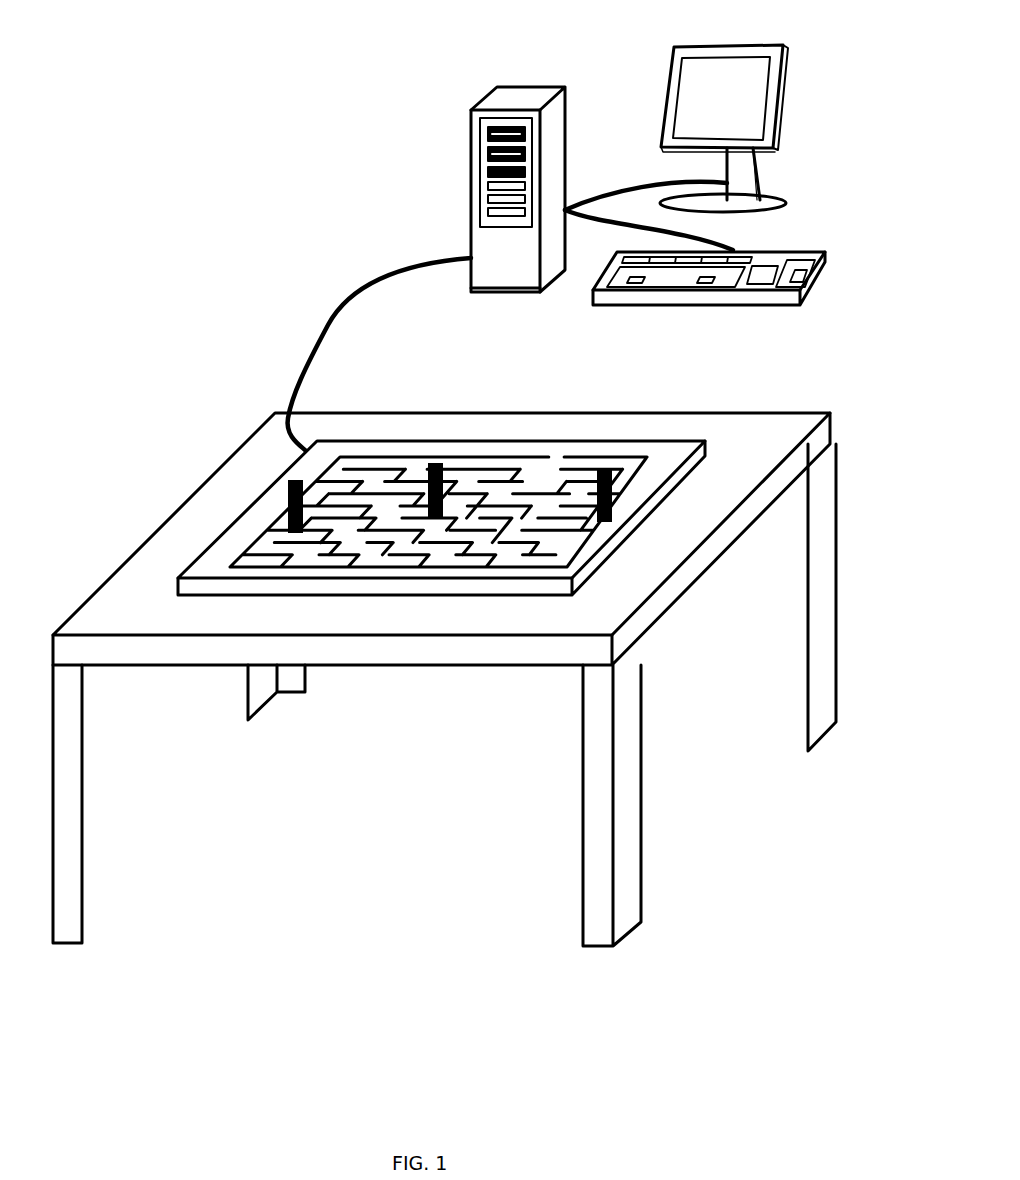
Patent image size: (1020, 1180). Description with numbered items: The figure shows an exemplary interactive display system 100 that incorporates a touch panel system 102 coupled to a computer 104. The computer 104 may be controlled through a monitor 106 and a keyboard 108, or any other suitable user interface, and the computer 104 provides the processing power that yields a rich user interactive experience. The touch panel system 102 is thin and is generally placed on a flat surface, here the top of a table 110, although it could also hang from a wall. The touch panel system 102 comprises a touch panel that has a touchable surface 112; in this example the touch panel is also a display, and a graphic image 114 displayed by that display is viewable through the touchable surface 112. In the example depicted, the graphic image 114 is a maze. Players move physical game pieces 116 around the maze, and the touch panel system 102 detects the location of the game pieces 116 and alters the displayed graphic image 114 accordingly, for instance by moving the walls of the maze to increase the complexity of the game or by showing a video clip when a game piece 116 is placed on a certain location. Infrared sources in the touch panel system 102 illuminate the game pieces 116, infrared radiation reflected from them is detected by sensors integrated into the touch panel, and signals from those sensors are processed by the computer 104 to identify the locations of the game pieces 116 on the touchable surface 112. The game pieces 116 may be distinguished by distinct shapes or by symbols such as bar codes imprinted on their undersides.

The interactive display system 100 is at (220, 158).
The touch panel system 102 is at (212, 542).
The computer 104 is at (471, 190).
The monitor 106 is at (787, 80).
The keyboard 108 is at (700, 305).
The table 110 is at (665, 614).
The touchable surface 112 is at (668, 456).
The graphic image 114 is at (390, 458).
The physical game pieces 116 is at (612, 501).